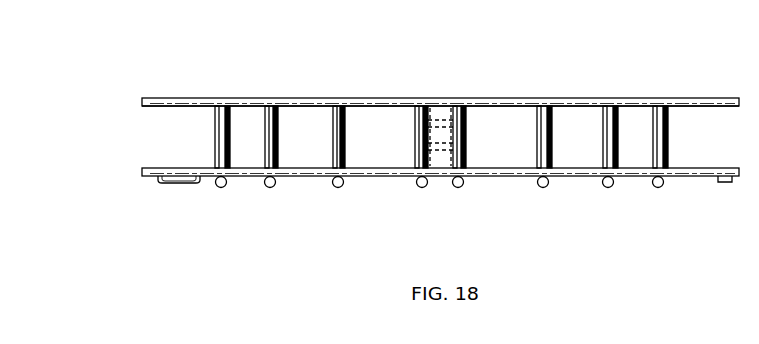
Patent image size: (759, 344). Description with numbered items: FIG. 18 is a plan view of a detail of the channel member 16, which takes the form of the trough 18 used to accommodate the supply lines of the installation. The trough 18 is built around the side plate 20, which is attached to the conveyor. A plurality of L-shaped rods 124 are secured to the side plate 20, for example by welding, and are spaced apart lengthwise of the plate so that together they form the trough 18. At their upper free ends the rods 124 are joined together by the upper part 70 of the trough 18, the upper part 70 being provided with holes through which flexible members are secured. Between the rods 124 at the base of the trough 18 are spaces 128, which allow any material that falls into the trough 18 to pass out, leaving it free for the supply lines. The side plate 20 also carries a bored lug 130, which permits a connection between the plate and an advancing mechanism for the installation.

The channel member 16 is at (513, 181).
The trough 18 is at (696, 123).
The side plate 20 is at (441, 98).
The upper part 70 is at (313, 172).
The L-shaped rods 124 is at (341, 186).
The spaces 128 is at (260, 152).
The bored lug 130 is at (440, 155).